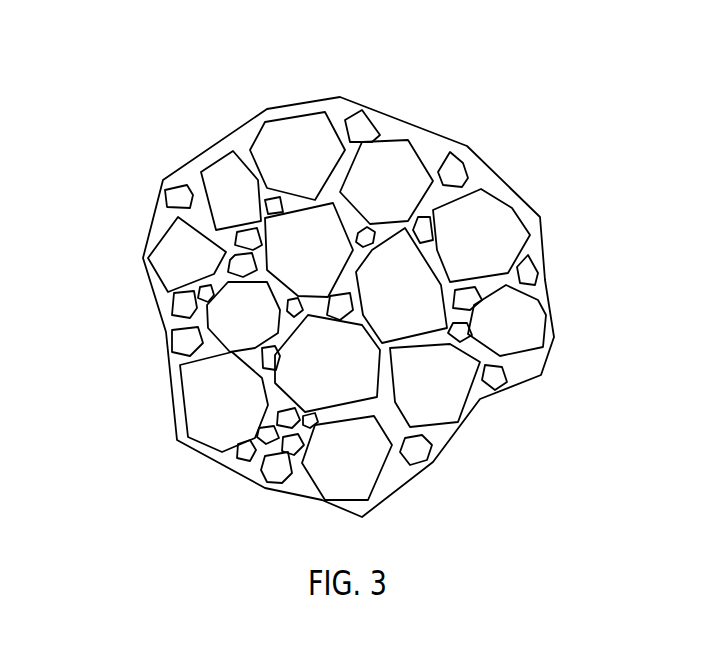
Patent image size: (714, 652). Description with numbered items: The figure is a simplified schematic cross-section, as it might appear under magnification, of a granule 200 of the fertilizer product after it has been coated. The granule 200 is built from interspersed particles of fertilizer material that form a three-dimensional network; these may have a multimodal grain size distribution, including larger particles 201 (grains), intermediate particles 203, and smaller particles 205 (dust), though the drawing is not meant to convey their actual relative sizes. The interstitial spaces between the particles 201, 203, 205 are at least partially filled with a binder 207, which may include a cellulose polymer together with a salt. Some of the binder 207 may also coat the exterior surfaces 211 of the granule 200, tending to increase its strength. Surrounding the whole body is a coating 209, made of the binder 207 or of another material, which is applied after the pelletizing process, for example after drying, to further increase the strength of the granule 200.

The granule 200 is at (474, 111).
The larger particles 201 is at (186, 268).
The intermediate particles 203 is at (185, 335).
The smaller particles 205 is at (203, 295).
The binder 207 is at (248, 447).
The coating 209 is at (544, 286).
The exterior surfaces 211 is at (257, 125).